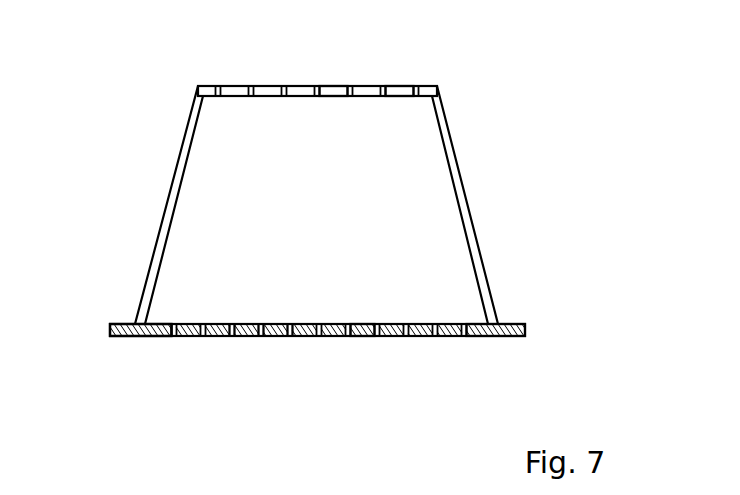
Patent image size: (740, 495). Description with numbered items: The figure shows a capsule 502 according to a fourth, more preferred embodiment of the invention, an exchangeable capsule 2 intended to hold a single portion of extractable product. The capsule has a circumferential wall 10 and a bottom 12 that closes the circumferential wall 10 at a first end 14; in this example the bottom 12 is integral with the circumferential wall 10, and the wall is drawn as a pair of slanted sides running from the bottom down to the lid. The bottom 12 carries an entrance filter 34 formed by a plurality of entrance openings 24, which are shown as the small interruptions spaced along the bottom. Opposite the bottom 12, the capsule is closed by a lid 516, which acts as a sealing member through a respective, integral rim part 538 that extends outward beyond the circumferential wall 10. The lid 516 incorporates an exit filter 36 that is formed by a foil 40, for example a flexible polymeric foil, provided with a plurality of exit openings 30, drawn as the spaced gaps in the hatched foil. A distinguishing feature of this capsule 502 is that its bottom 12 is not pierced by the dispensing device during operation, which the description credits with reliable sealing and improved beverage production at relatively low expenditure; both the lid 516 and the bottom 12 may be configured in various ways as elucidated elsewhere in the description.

The capsule 502 is at (168, 88).
The entrance openings 24 is at (284, 85).
The entrance filter 34 is at (361, 81).
The bottom 12 is at (399, 92).
The first end 14 is at (443, 108).
The circumferential wall 10 is at (469, 225).
The rim part 538 is at (115, 329).
The exchangeable capsule 2 is at (530, 342).
The foil 40 is at (158, 337).
The exit openings 30 is at (288, 340).
The exit filter 36 is at (360, 340).
The lid 516 is at (477, 337).